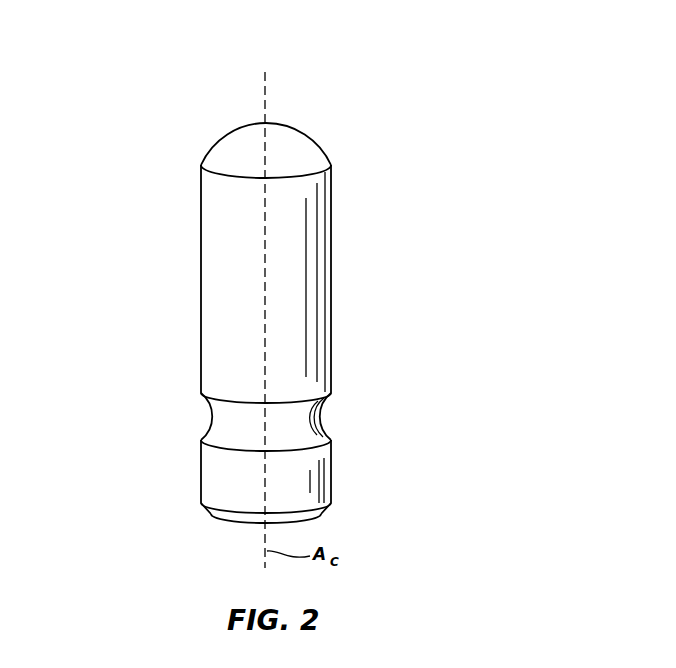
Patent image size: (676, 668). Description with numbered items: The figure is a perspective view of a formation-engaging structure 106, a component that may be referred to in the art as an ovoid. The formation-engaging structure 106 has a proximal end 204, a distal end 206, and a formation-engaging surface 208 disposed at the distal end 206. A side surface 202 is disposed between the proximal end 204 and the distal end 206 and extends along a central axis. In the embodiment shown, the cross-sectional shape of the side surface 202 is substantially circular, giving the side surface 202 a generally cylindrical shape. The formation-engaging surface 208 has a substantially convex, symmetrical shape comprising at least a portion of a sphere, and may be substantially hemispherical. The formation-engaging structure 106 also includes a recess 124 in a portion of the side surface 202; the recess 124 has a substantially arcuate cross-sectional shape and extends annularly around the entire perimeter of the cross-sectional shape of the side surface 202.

The formation-engaging structure 106 is at (478, 125).
The distal end 206 is at (154, 162).
The formation-engaging surface 208 is at (318, 142).
The side surface 202 is at (331, 282).
The recess 124 is at (302, 436).
The proximal end 204 is at (367, 514).